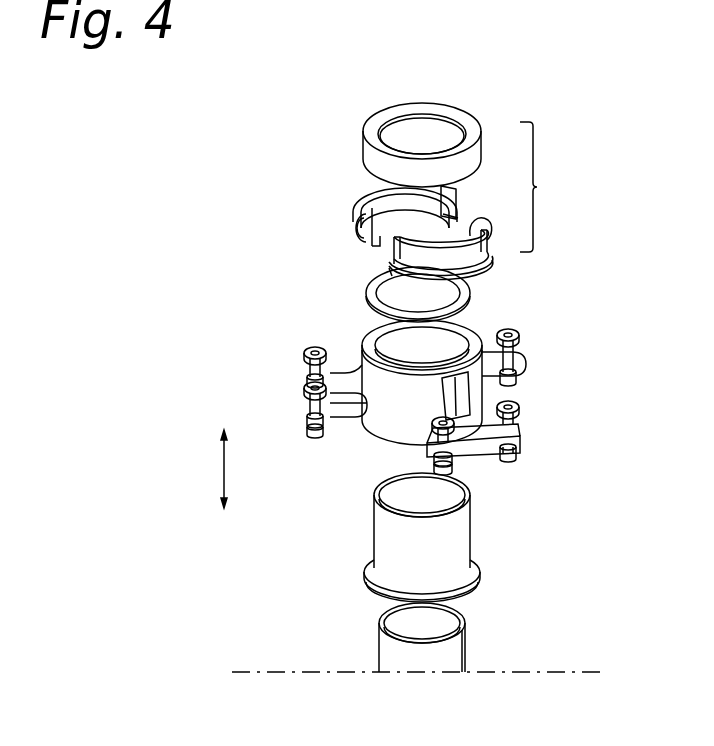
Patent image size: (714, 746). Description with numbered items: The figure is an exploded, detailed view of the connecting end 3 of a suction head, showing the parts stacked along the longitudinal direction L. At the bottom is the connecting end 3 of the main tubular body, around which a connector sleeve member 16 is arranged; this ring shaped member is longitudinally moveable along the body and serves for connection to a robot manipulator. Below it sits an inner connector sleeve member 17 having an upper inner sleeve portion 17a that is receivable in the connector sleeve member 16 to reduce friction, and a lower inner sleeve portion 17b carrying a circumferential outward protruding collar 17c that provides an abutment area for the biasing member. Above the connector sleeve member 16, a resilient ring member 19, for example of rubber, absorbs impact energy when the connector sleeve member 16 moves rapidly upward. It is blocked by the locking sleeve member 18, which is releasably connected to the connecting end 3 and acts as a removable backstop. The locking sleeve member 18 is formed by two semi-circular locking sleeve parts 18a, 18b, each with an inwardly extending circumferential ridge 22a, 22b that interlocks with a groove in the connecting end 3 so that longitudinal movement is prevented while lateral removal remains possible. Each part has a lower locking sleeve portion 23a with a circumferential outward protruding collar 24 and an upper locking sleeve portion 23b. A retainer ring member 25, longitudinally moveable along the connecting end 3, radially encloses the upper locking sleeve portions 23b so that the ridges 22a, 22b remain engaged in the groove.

The connecting end 3 is at (380, 644).
The connector sleeve member 16 is at (393, 433).
The inner connector sleeve member 17 is at (416, 537).
The upper inner sleeve portion 17a is at (374, 523).
The lower inner sleeve portion 17b is at (365, 574).
The circumferential outward protruding collar 17c is at (482, 573).
The locking sleeve member 18 is at (537, 188).
The semi-circular locking sleeve part 18a is at (382, 159).
The semi-circular locking sleeve part 18b is at (484, 237).
The resilient ring member 19 is at (467, 302).
The inwardly extending circumferential ridge 22a is at (378, 196).
The inwardly extending circumferential ridge 22b is at (470, 198).
The lower locking sleeve portion 23a is at (366, 248).
The upper locking sleeve portion 23b is at (352, 232).
The circumferential outward protruding collar 24 is at (358, 222).
The retainer ring member 25 is at (373, 127).
The longitudinal direction L is at (222, 470).